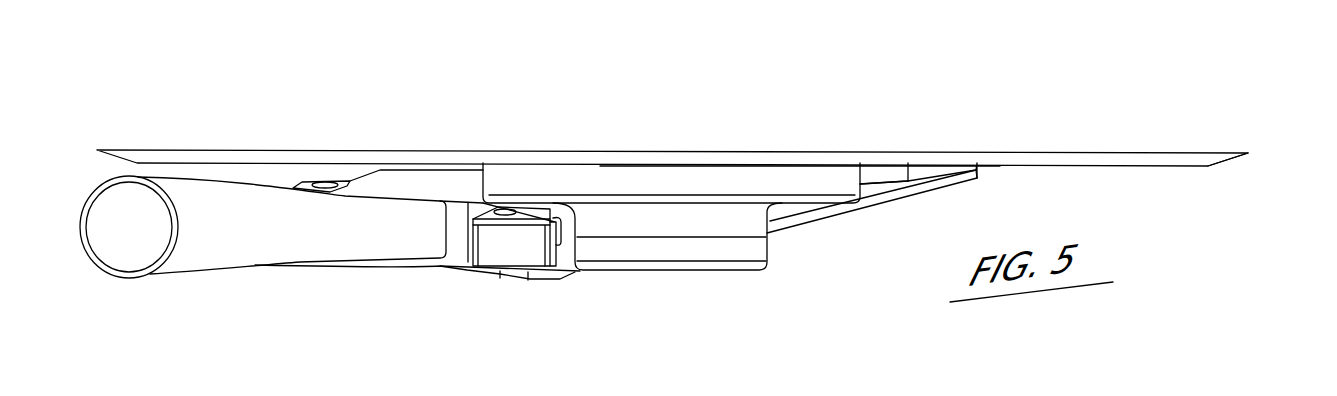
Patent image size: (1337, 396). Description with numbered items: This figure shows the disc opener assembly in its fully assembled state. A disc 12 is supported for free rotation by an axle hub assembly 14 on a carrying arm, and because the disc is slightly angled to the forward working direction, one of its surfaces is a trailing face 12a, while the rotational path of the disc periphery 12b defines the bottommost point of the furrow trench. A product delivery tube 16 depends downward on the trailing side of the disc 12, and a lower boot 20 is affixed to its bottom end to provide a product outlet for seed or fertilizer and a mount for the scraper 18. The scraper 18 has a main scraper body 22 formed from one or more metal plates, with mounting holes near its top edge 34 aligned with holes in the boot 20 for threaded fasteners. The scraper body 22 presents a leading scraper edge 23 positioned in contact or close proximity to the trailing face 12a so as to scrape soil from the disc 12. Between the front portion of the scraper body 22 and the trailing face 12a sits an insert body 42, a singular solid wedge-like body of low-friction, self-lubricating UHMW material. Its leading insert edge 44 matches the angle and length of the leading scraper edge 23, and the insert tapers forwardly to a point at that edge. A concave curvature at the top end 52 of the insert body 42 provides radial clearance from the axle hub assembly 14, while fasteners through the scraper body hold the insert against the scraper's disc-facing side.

The disc 12 is at (1060, 152).
The trailing face 12a is at (1027, 168).
The disc periphery 12b is at (1252, 152).
The axle hub assembly 14 is at (694, 224).
The product delivery tube 16 is at (198, 253).
The scraper 18 is at (805, 235).
The lower boot 20 is at (497, 250).
The scraper body 22 is at (925, 187).
The leading scraper edge 23 is at (980, 172).
The top edge 34 is at (400, 268).
The insert body 42 is at (885, 182).
The leading insert edge 44 is at (950, 172).
The top end 52 is at (867, 178).